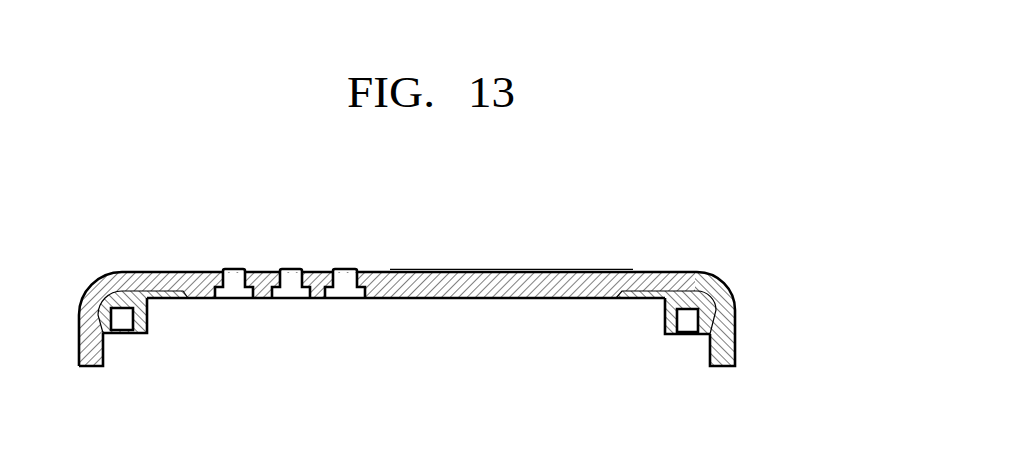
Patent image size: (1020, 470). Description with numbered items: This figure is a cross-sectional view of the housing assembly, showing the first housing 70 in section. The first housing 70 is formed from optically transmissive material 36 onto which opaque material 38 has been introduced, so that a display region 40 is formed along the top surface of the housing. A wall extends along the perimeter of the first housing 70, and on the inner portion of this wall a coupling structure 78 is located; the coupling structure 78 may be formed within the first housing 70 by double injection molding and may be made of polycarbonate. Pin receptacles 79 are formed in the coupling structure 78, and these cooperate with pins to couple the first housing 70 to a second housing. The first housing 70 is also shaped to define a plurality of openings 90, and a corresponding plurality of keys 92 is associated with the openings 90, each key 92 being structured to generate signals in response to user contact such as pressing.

The first housing 70 is at (415, 282).
The coupling structure 78 is at (162, 292).
The pin receptacles 79 is at (125, 318).
The openings 90 is at (282, 268).
The keys 92 is at (290, 269).
The opaque material 38 is at (382, 271).
The optically transmissive material 36 is at (442, 283).
The display region 40 is at (495, 269).